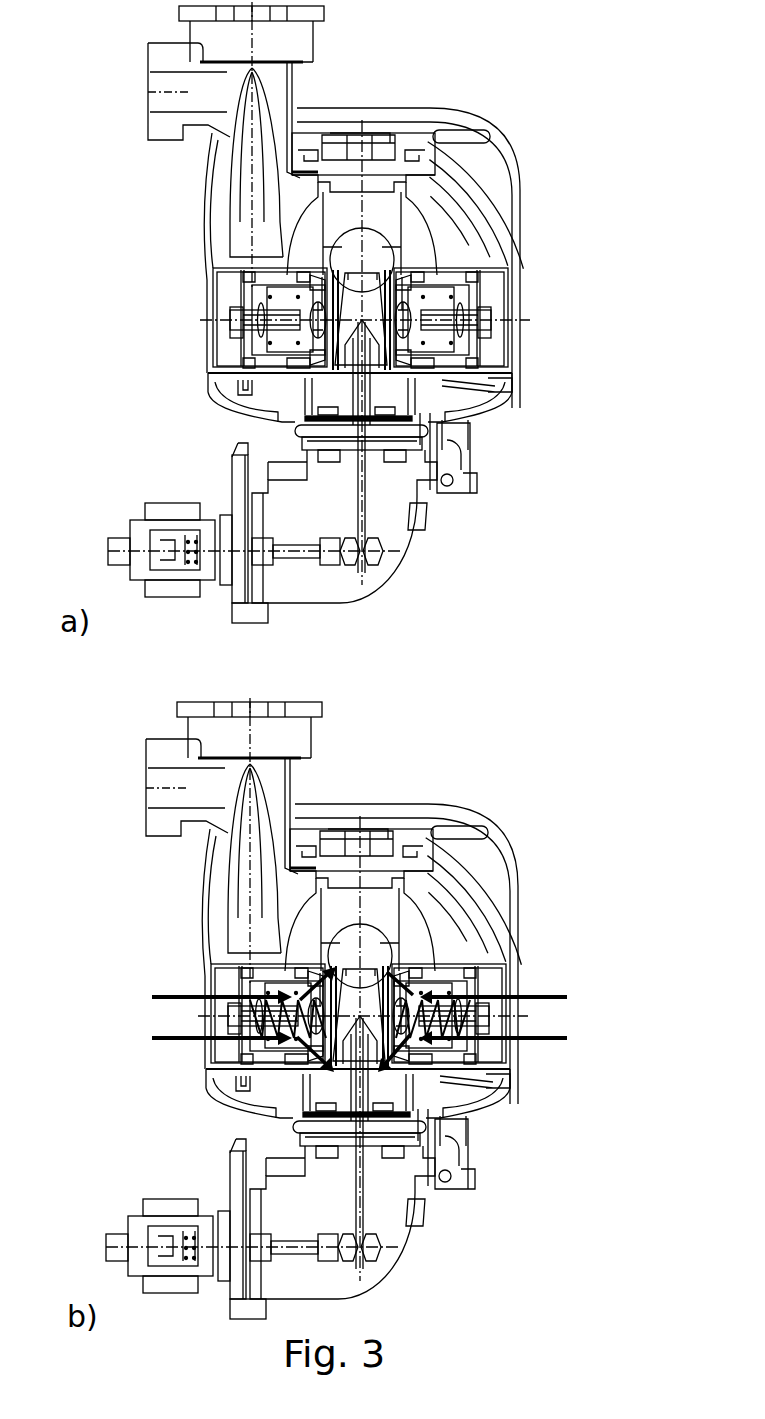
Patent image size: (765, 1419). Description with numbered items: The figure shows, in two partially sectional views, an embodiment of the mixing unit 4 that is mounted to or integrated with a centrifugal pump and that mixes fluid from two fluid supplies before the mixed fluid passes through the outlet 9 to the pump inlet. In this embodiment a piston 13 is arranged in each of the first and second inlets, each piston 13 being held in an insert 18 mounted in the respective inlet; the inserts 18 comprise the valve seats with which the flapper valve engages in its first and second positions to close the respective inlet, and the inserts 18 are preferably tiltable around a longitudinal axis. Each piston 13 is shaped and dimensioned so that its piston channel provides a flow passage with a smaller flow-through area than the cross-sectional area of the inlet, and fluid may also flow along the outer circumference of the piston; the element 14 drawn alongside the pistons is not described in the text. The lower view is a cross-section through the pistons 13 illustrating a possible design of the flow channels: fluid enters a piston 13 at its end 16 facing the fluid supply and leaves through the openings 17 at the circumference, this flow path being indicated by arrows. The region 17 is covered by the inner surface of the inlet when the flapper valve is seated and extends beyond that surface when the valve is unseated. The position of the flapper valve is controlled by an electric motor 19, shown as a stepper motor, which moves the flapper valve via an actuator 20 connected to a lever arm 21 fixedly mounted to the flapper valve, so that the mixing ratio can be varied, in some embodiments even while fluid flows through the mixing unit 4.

The mixing unit 4 is at (360, 328).
The outlet 9 is at (373, 250).
The piston 13 is at (282, 297).
The guide pin 14 is at (250, 330).
The end of the piston 16 is at (268, 342).
The region of a circumferential surface of the piston 17 is at (323, 292).
The insert 18 is at (317, 288).
The electric motor 19 is at (140, 490).
The actuator 20 is at (295, 555).
The lever arm 21 is at (362, 515).